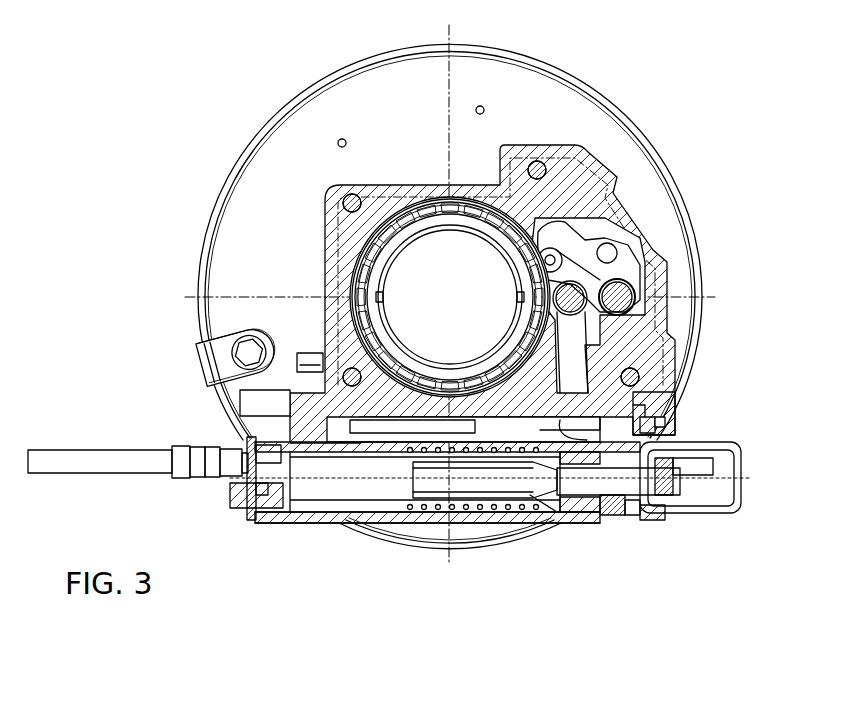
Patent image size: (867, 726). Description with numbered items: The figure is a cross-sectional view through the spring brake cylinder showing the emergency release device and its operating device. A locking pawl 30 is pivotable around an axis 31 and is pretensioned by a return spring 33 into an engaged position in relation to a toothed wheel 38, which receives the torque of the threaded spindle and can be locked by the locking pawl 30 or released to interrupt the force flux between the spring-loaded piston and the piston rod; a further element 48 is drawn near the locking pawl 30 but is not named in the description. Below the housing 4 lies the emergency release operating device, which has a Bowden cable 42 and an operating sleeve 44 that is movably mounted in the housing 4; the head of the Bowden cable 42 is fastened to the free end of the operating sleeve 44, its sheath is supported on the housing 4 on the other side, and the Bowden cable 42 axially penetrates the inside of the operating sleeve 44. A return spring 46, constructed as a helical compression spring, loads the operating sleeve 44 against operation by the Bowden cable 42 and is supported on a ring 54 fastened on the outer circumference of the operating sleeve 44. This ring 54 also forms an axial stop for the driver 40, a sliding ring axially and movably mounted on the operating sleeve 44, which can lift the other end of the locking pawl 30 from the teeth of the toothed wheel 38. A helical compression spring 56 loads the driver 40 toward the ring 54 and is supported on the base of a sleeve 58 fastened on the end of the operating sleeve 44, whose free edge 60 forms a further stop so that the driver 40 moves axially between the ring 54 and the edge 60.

The housing 4 is at (270, 513).
The locking pawl 30 is at (575, 347).
The axis 31 is at (570, 300).
The return spring 33 is at (636, 262).
The toothed wheel 38 is at (440, 210).
The driver 40 is at (600, 440).
The Bowden cable 42 is at (365, 463).
The operating sleeve 44 is at (518, 502).
The return spring 46 is at (440, 510).
The eccentric 48 is at (546, 250).
The ring 54 is at (547, 512).
The helical compression spring 56 is at (612, 510).
The sleeve 58 is at (660, 514).
The free edge 60 is at (630, 508).